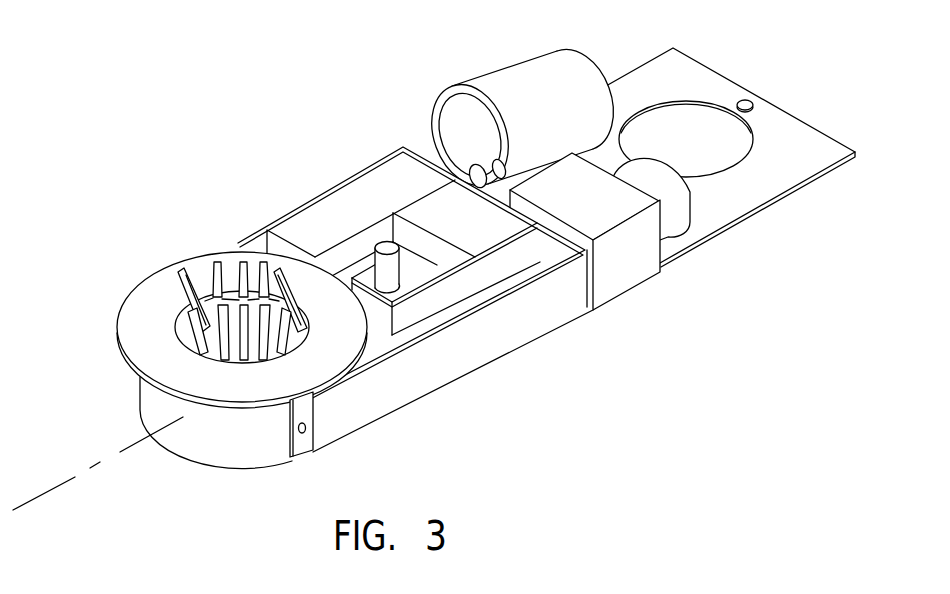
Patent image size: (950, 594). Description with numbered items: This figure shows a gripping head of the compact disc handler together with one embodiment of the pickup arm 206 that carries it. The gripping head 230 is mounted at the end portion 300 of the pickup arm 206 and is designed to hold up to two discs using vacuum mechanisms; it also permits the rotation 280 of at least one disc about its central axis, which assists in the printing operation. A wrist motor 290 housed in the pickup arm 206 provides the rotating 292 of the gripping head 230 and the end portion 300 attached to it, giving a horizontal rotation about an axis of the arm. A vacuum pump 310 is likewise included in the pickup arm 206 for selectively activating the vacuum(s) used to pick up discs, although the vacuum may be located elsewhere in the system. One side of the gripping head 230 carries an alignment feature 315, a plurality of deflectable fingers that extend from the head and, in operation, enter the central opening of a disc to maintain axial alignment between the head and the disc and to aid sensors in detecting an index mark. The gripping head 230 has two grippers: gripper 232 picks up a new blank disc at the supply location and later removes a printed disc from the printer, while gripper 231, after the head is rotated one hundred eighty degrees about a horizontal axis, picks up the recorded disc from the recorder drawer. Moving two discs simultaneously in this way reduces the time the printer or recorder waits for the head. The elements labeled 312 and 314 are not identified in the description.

The pickup arm 206 is at (364, 76).
The gripping head 230 is at (228, 331).
The gripper 231 is at (197, 380).
The gripper 232 is at (243, 469).
The rotation 280 is at (176, 248).
The wrist motor 290 is at (620, 277).
The rotating 292 is at (466, 288).
The end portion 300 is at (558, 312).
The vacuum pump 310 is at (522, 117).
The cover block 312 is at (347, 202).
The platform 314 is at (518, 279).
The alignment feature 315 is at (212, 247).